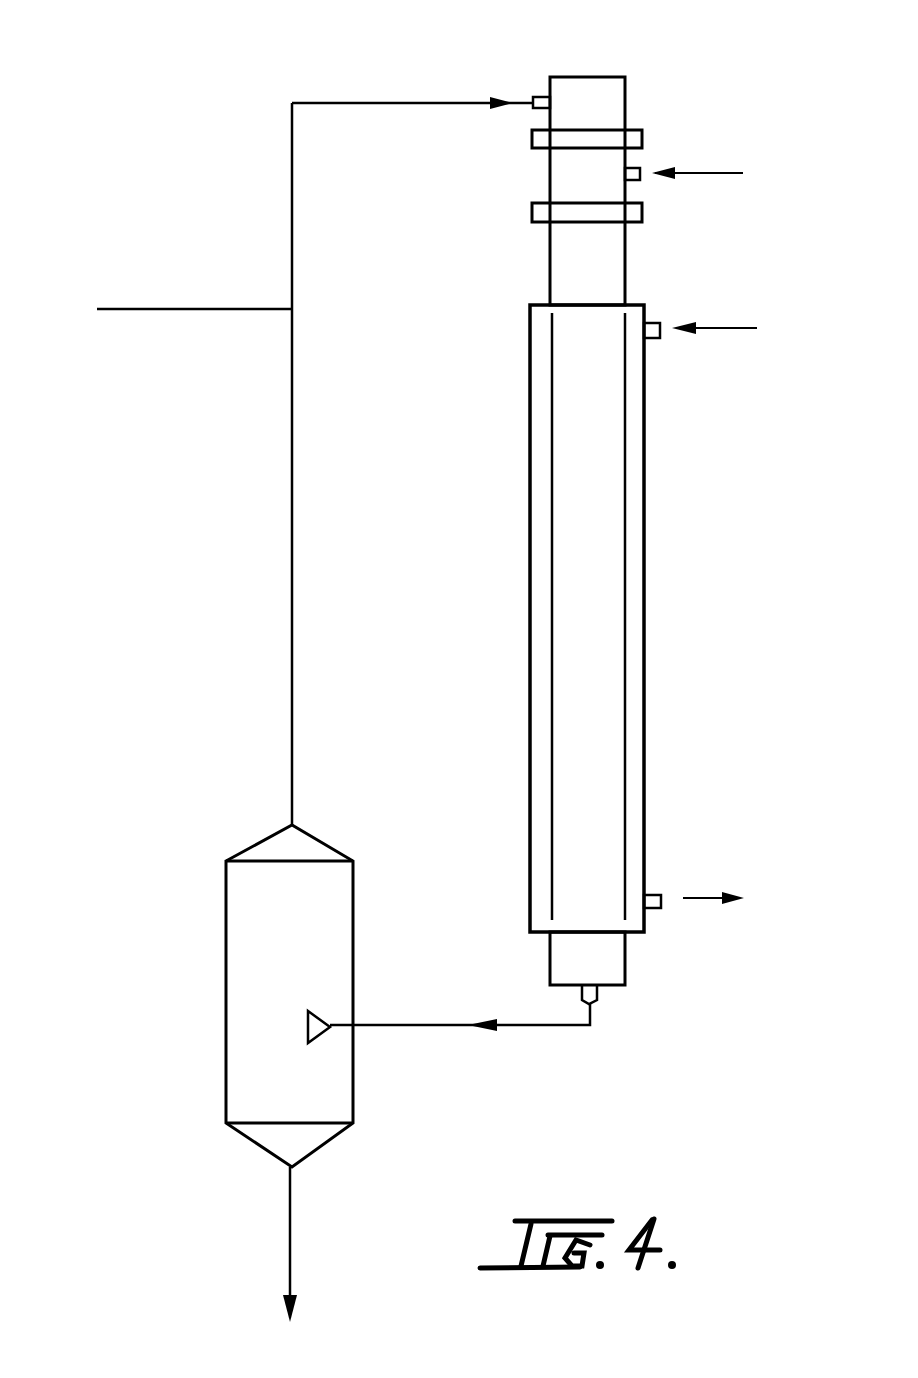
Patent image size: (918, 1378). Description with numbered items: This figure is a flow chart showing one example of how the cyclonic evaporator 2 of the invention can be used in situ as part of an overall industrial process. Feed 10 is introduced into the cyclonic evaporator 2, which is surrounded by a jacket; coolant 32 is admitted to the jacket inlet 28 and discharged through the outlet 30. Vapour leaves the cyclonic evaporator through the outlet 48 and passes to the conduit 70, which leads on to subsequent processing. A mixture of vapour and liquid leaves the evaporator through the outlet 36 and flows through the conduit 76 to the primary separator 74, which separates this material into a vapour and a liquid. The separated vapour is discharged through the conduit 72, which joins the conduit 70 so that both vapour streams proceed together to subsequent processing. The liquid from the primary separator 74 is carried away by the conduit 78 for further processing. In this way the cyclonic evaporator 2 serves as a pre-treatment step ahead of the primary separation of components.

The cyclonic evaporator 2 is at (660, 520).
The feed 10 is at (695, 173).
The jacket inlet 28 is at (661, 320).
The outlet 30 is at (660, 893).
The coolant 32 is at (732, 328).
The outlet 36 is at (598, 997).
The outlet 48 is at (535, 97).
The conduit 70 is at (290, 127).
The conduit 72 is at (291, 448).
The primary separator 74 is at (222, 882).
The conduit 76 is at (442, 1028).
The conduit 78 is at (290, 1197).